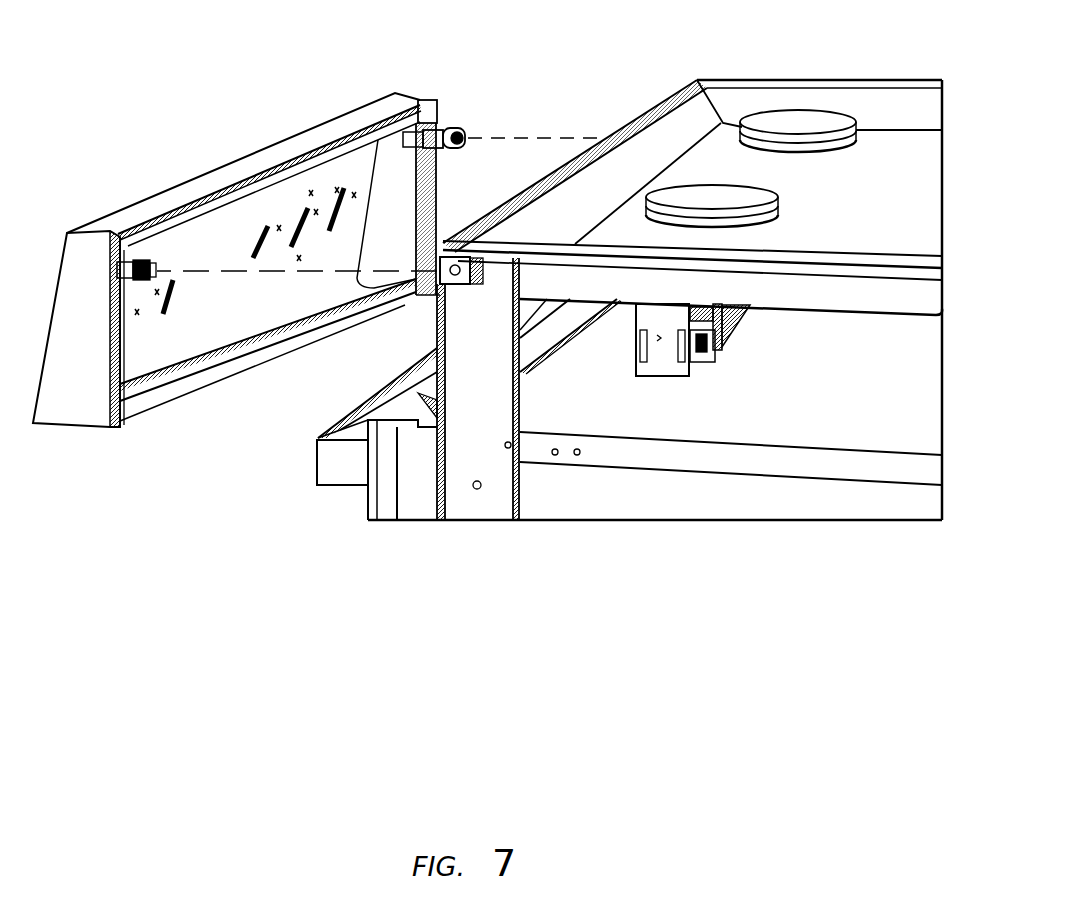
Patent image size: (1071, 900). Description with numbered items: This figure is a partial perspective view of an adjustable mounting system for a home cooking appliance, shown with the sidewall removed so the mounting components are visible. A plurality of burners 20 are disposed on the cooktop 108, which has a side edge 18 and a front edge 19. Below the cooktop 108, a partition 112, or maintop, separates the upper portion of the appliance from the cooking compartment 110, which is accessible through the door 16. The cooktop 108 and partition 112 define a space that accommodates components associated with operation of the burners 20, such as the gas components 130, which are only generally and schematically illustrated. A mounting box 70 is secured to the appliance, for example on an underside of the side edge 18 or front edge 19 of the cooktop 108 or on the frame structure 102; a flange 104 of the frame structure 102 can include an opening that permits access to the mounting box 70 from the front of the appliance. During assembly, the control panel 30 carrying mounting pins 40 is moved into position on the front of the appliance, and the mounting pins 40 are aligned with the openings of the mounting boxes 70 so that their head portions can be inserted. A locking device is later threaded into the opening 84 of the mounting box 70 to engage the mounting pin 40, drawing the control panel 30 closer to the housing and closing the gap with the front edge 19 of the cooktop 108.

The door 16 is at (418, 504).
The side edge 18 is at (743, 80).
The front edge 19 is at (657, 107).
The burners 20 is at (800, 120).
The control panel 30 is at (272, 126).
The mounting pins 40 is at (444, 128).
The mounting box 70 is at (470, 287).
The opening 84 is at (437, 292).
The frame structure 102 is at (496, 504).
The flange 104 is at (440, 383).
The cooktop 108 is at (895, 190).
The cooking compartment 110 is at (637, 504).
The partition 112 is at (869, 415).
The gas components 130 is at (735, 360).